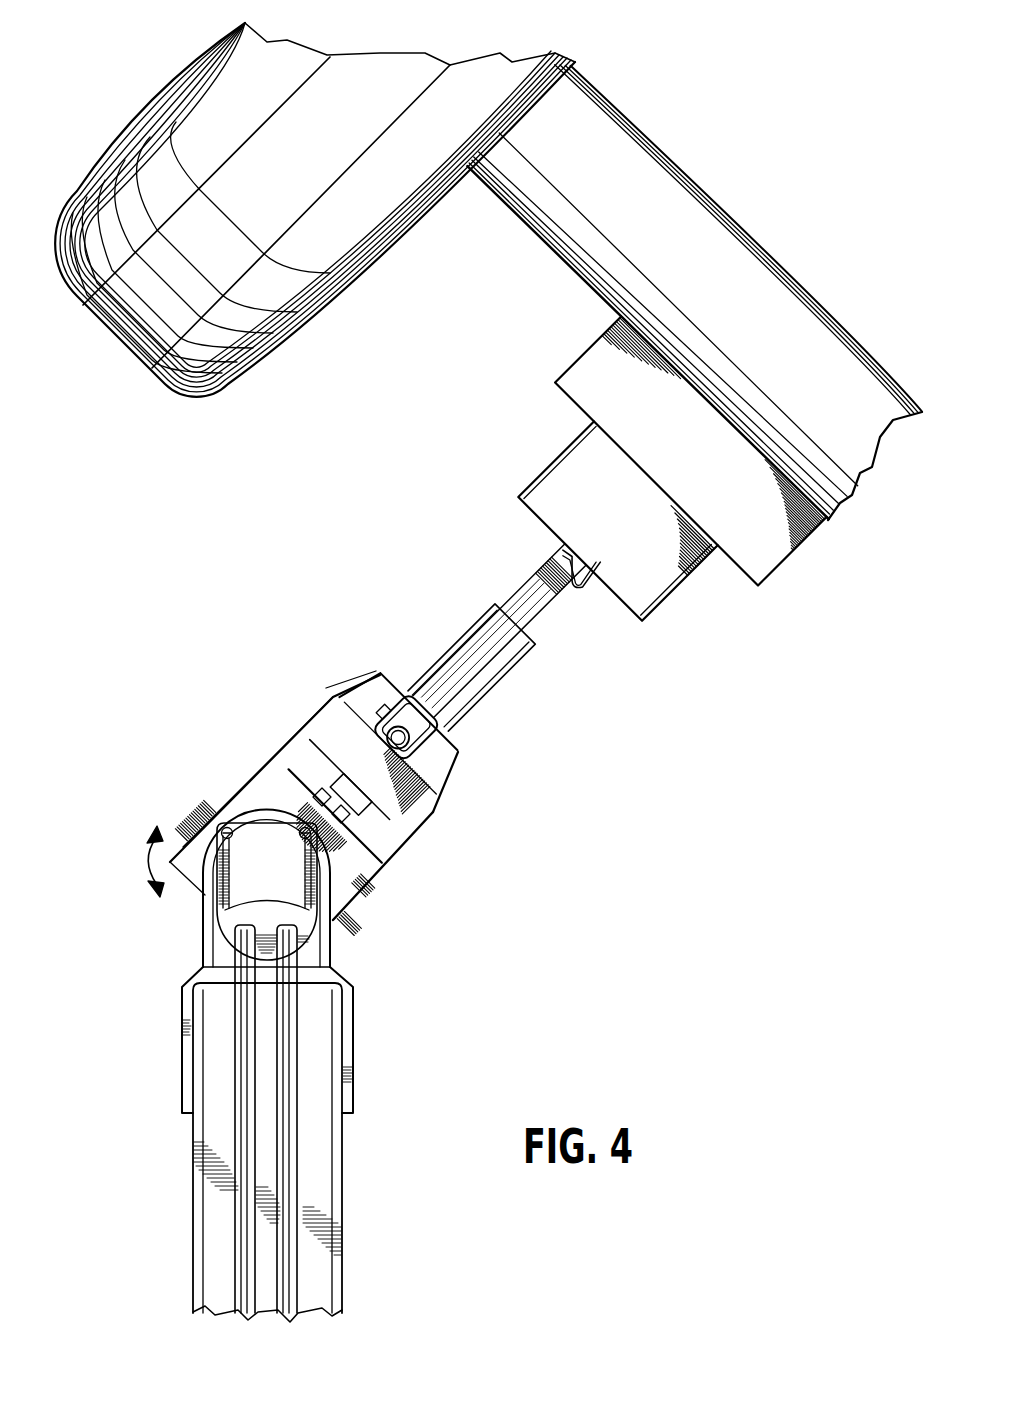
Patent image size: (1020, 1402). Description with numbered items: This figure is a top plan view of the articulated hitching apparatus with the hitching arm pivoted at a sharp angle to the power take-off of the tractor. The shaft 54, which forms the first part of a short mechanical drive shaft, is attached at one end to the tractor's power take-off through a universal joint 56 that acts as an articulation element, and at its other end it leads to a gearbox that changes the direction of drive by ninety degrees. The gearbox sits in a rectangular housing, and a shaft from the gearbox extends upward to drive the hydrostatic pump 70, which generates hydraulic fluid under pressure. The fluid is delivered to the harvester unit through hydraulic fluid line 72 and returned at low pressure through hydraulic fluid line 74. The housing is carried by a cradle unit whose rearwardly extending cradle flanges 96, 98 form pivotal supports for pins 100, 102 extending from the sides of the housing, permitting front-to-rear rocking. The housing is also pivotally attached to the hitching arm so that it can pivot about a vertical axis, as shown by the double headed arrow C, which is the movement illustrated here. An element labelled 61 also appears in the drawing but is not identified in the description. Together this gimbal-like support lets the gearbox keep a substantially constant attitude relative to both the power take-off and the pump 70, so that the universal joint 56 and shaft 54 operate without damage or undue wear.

The shaft 54 is at (523, 610).
The universal joint 56 is at (557, 553).
The cylinder housing with clevis 61 is at (372, 690).
The hydrostatic pump 70 is at (280, 887).
The hydraulic fluid line 72 is at (288, 1038).
The hydraulic fluid line 74 is at (247, 1077).
The cradle flange 96 is at (240, 782).
The cradle flange 98 is at (372, 890).
The pin 100 is at (212, 807).
The pin 102 is at (343, 923).
The double headed arrow C is at (140, 858).